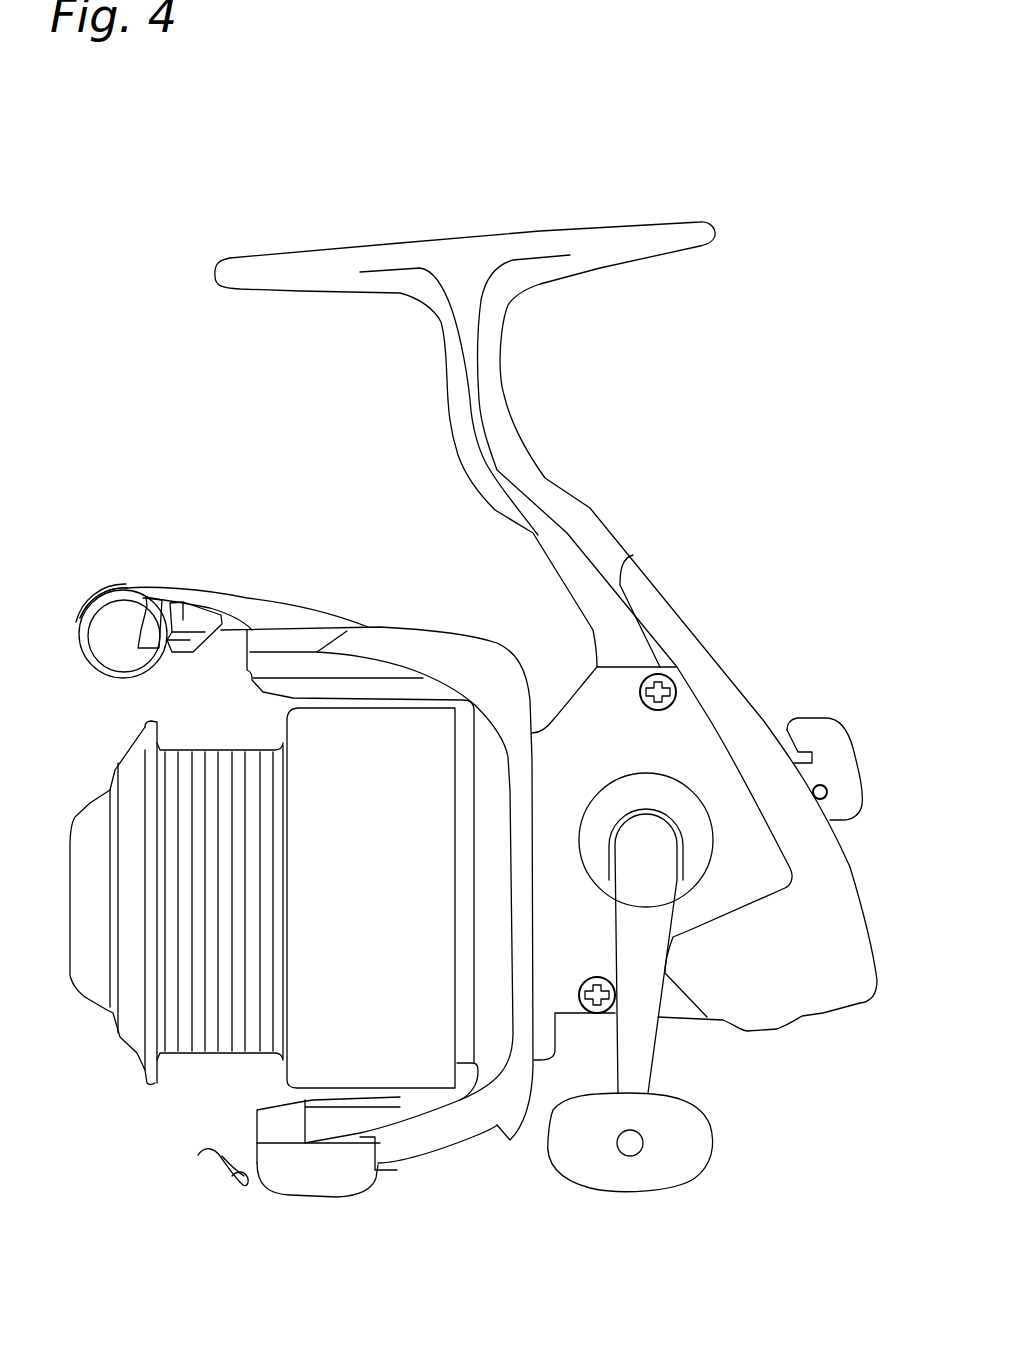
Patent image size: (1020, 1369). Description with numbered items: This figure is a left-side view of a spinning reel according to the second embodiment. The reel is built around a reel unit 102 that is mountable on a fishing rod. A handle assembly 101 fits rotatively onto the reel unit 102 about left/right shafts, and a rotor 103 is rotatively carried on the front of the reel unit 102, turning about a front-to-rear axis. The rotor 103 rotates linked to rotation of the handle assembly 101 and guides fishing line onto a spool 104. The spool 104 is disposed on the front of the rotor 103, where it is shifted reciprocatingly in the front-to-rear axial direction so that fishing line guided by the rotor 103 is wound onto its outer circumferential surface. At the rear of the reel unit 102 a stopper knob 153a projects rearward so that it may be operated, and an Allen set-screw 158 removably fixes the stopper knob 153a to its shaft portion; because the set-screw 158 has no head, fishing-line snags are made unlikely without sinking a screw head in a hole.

The handle assembly 101 is at (656, 1060).
The reel unit 102 is at (604, 510).
The rotor 103 is at (490, 1107).
The spool 104 is at (200, 1040).
The stopper knob 153a is at (803, 723).
The Allen set-screw 158 is at (828, 788).